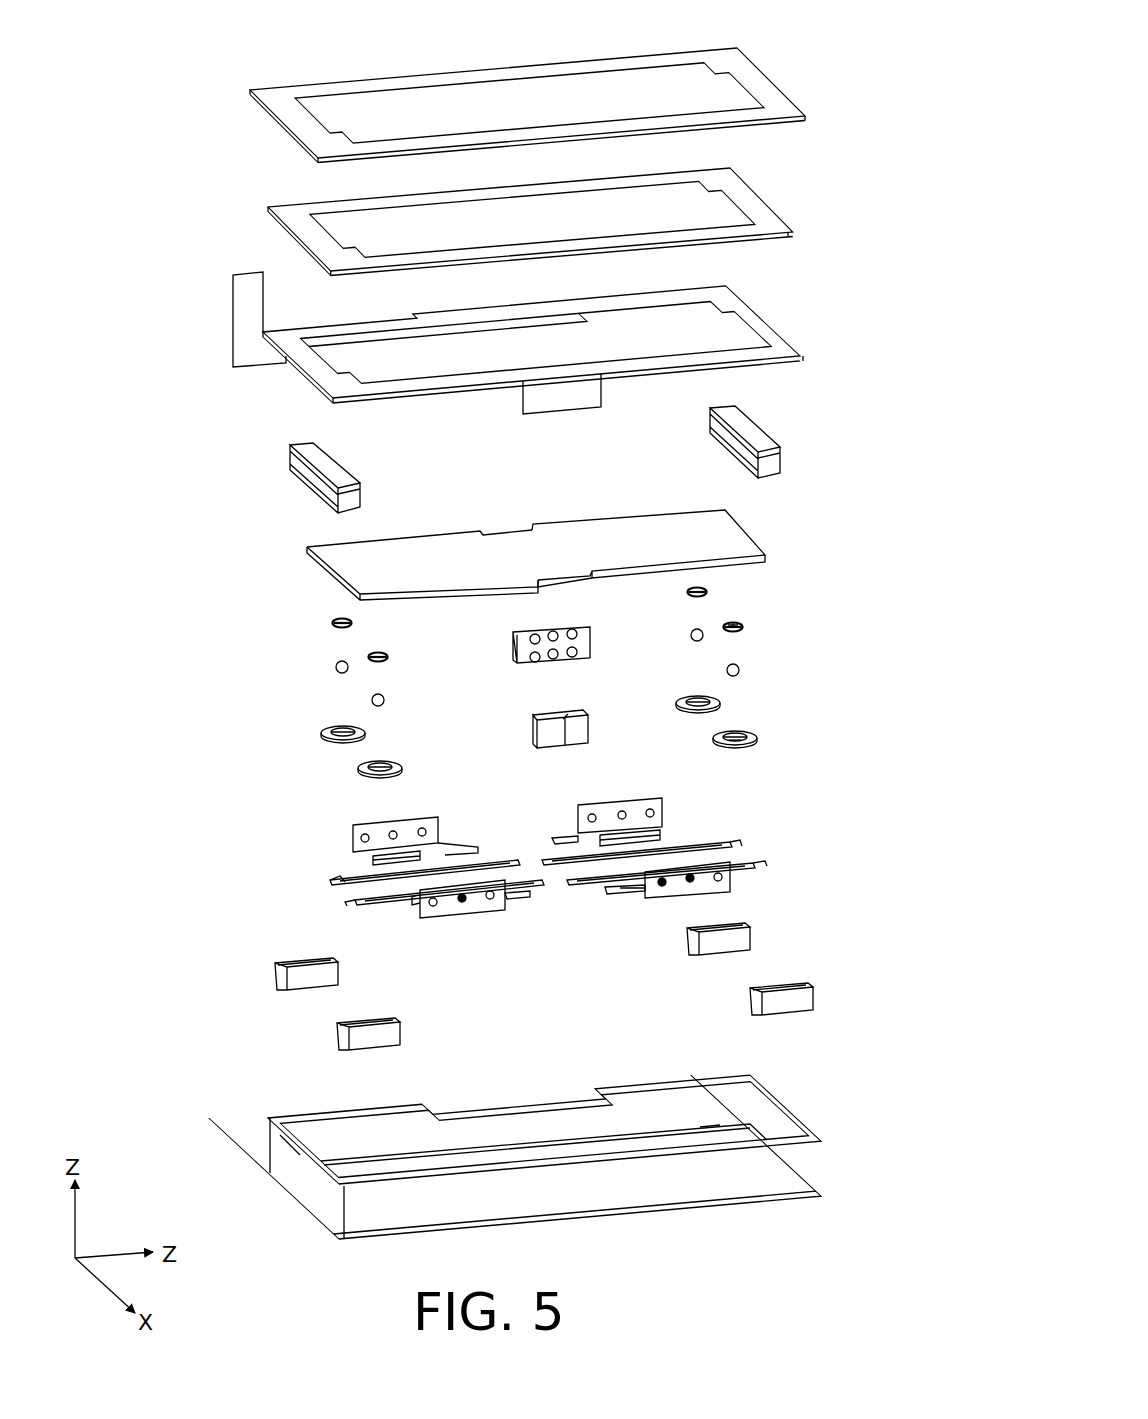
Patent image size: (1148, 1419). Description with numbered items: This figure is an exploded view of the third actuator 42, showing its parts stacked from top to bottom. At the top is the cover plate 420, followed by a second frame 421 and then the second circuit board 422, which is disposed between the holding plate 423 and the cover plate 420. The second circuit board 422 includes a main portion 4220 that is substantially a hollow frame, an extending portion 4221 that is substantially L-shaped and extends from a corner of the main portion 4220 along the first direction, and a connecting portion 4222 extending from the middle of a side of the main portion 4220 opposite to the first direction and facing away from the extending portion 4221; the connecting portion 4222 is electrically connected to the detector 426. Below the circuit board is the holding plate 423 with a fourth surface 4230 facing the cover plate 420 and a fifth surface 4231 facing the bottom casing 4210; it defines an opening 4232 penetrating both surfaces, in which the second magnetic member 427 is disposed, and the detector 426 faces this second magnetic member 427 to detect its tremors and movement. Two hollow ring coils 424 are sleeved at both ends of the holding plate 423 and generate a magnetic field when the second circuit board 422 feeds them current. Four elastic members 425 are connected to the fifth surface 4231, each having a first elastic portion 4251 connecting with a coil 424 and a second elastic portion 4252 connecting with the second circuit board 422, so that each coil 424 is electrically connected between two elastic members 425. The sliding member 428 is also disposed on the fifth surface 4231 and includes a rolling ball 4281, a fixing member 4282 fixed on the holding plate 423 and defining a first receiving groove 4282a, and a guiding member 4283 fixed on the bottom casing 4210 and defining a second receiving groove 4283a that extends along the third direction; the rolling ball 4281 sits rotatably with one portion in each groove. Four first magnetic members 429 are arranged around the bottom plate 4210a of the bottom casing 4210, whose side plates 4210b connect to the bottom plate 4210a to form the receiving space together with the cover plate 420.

The third actuator 42 is at (205, 62).
The cover plate 420 is at (786, 104).
The second frame 421 is at (770, 218).
The second circuit board 422 is at (488, 363).
The main portion 4220 is at (295, 365).
The extending portion 4221 is at (247, 310).
The connecting portion 4222 is at (573, 400).
The holding plate 423 is at (531, 520).
The fourth surface 4230 is at (474, 520).
The fifth surface 4231 is at (320, 573).
The opening 4232 is at (515, 520).
The coil 424 is at (748, 432).
The elastic member 425 is at (551, 866).
The first elastic portion 4251 is at (330, 877).
The second elastic portion 4252 is at (447, 905).
The detector 426 is at (513, 635).
The second magnetic member 427 is at (552, 730).
The sliding member 428 is at (624, 692).
The rolling ball 4281 is at (739, 670).
The fixing member 4282 is at (594, 616).
The first receiving groove 4282a is at (737, 622).
The guiding member 4283 is at (584, 755).
The second receiving groove 4283a is at (737, 745).
The first magnetic member 429 is at (797, 1002).
The bottom casing 4210 is at (530, 1154).
The bottom plate 4210a is at (717, 1143).
The side plate 4210b is at (293, 1162).